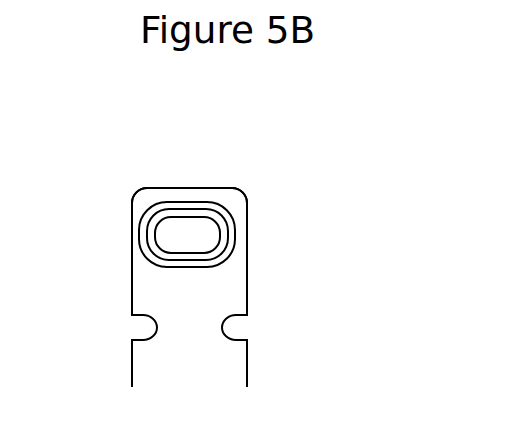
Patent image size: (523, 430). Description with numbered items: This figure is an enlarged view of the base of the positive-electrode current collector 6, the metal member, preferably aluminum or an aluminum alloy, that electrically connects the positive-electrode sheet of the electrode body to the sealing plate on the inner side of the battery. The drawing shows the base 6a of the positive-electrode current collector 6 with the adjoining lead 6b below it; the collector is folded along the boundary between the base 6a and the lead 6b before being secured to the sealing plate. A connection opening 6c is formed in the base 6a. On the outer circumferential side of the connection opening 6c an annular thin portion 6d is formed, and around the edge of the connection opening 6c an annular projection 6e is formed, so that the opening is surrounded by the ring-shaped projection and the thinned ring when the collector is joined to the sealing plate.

The positive-electrode current collector 6 is at (427, 300).
The base 6a is at (227, 293).
The lead 6b is at (218, 370).
The connection opening 6c is at (203, 217).
The annular thin portion 6d is at (232, 242).
The annular projection 6e is at (152, 232).